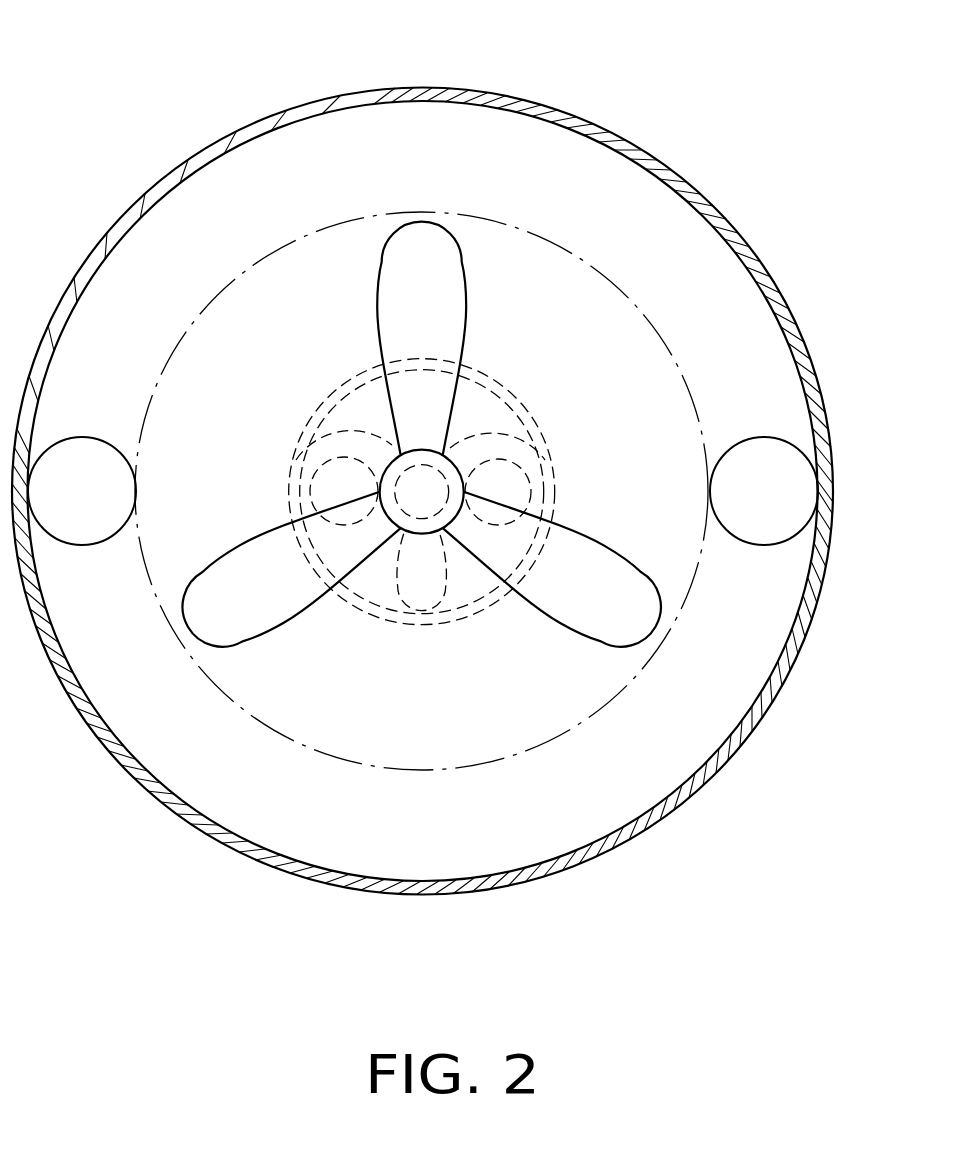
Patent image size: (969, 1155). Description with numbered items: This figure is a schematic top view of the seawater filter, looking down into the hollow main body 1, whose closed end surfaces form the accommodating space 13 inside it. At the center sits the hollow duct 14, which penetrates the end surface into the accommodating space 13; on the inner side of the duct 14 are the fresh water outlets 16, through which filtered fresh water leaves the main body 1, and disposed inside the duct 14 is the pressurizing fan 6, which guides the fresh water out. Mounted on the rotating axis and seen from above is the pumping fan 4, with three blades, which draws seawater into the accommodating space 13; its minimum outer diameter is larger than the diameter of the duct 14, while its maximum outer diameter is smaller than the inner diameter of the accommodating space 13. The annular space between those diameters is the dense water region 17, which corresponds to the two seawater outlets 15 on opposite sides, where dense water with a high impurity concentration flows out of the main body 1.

The main body 1 is at (552, 114).
The dense water region 17 is at (203, 232).
The accommodating space 13 is at (627, 283).
The seawater outlets 15 is at (785, 455).
The pumping fan 4 is at (580, 612).
The duct 14 is at (498, 381).
The pressurizing fan 6 is at (313, 414).
The fresh water outlet 16 is at (522, 486).